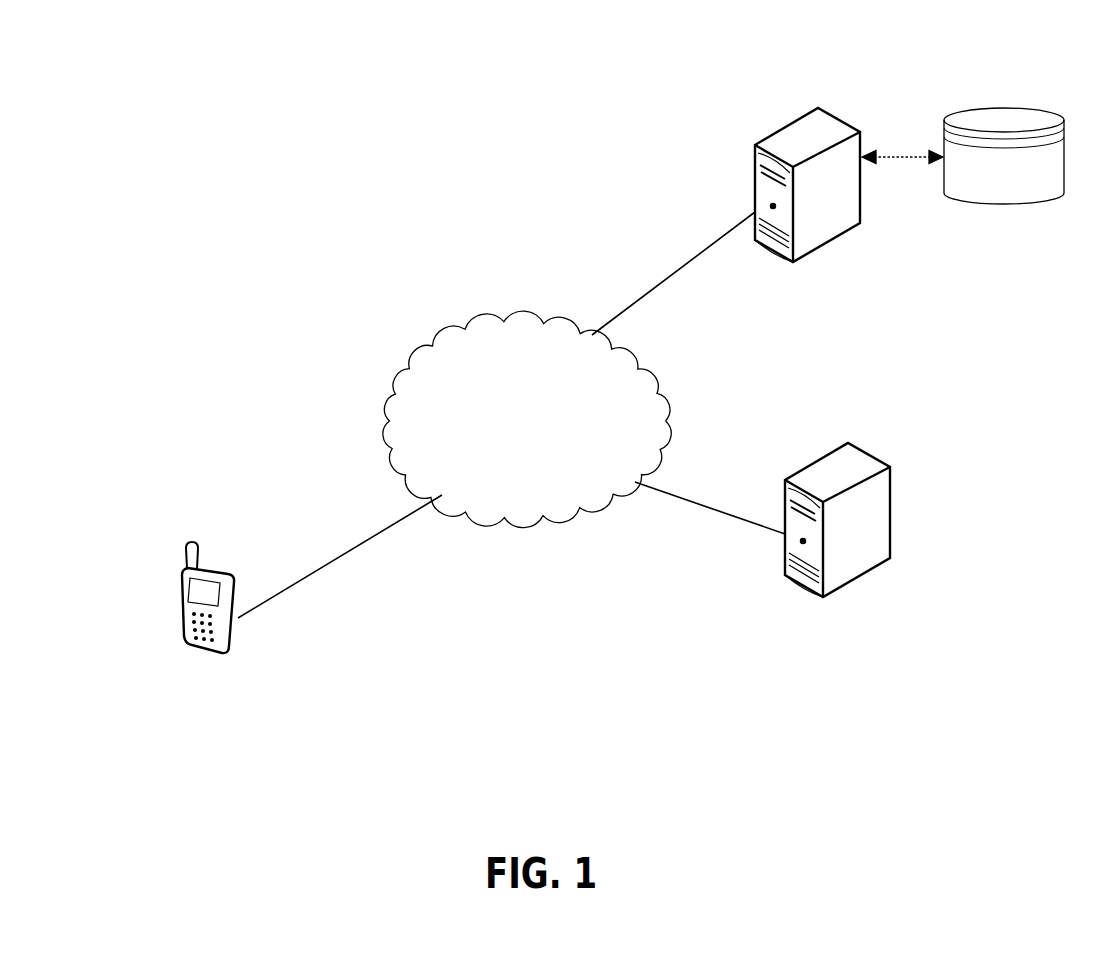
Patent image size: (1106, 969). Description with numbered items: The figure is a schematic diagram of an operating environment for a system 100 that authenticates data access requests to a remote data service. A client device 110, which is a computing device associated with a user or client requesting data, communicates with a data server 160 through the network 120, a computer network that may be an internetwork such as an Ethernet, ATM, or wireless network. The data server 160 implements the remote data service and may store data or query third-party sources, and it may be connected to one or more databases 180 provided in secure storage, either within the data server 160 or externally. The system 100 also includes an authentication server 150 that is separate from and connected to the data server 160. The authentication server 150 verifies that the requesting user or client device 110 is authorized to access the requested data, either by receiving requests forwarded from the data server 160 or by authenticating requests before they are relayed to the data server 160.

The system 100 is at (153, 101).
The client device 110 is at (231, 568).
The network 120 is at (544, 448).
The authentication server 150 is at (862, 462).
The data server 160 is at (818, 110).
The databases 180 is at (1017, 117).